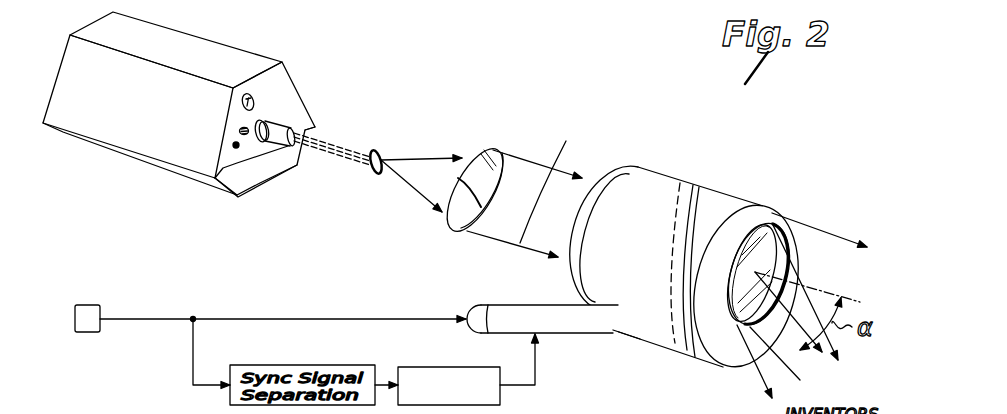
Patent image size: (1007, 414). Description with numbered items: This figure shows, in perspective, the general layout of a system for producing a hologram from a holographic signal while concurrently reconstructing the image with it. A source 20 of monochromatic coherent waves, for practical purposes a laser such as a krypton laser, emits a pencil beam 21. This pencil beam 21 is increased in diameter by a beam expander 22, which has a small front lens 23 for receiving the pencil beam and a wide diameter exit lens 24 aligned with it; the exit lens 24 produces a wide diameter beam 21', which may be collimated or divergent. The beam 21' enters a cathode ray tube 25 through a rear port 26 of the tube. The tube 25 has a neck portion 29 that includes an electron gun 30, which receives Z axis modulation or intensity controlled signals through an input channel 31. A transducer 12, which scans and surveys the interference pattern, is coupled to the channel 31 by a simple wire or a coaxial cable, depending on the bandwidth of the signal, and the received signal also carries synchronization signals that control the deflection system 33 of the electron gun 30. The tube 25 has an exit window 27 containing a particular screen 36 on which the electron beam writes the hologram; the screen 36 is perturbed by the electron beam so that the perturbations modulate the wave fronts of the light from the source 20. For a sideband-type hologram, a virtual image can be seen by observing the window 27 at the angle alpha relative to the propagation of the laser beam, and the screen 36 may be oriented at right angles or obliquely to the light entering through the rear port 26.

The transducer 12 is at (85, 303).
The source 20 is at (233, 60).
The pencil beam 21 is at (345, 134).
The wide diameter beam 21' is at (535, 193).
The beam expander 22 is at (439, 149).
The front lens 23 is at (372, 175).
The exit lens 24 is at (483, 147).
The cathode ray tube 25 is at (682, 192).
The rear port 26 is at (615, 175).
The exit window 27 is at (782, 268).
The neck portion 29 is at (557, 318).
The electron gun 30 is at (473, 305).
The input channel 31 is at (163, 318).
The deflection system 33 is at (448, 367).
The screen 36 is at (772, 223).